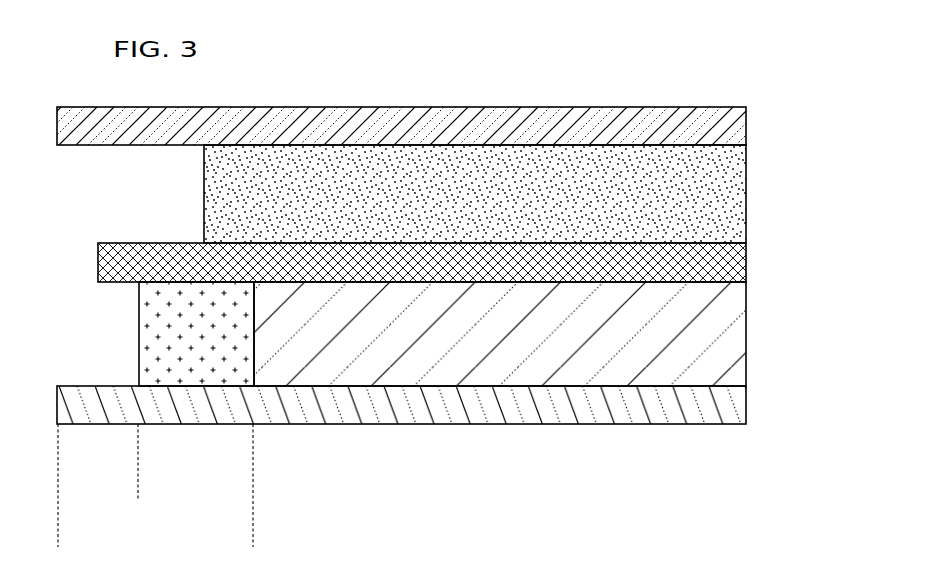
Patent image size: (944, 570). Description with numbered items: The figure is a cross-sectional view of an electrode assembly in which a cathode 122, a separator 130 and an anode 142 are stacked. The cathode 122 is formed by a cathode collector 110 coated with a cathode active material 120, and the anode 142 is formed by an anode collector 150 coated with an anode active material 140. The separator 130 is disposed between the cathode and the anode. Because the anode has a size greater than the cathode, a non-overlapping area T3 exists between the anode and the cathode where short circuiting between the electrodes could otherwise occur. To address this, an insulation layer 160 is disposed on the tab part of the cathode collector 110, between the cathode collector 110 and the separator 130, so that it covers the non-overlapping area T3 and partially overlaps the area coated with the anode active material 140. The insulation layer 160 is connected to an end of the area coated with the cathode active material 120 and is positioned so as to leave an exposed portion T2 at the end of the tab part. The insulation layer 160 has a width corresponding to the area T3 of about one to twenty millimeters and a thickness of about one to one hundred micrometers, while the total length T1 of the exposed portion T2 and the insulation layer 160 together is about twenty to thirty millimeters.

The cathode collector 110 is at (737, 404).
The cathode active material 120 is at (737, 333).
The cathode 122 is at (471, 353).
The separator 130 is at (746, 257).
The anode active material 140 is at (746, 185).
The anode 142 is at (471, 175).
The anode collector 150 is at (746, 122).
The insulation layer 160 is at (150, 335).
The total length T1 is at (253, 540).
The exposed portion T2 is at (138, 493).
The non-overlapping area T3 is at (253, 493).